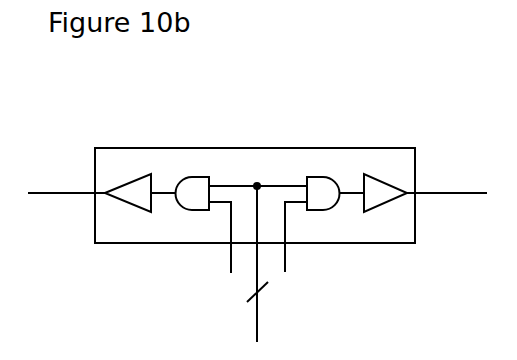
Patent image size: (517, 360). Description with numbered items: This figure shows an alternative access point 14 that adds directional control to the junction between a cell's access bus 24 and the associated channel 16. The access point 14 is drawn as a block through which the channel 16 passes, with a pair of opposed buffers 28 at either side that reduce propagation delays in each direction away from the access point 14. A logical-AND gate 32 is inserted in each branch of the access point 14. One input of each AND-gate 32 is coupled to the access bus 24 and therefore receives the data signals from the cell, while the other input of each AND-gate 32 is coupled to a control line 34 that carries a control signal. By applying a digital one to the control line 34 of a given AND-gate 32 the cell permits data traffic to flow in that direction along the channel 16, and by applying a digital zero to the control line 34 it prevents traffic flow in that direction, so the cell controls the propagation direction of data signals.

The access point 14 is at (268, 148).
The channel 16 is at (64, 194).
The access bus 24 is at (257, 330).
The buffer 28 is at (131, 181).
The logical-AND gate 32 is at (193, 177).
The control line 34 is at (231, 263).